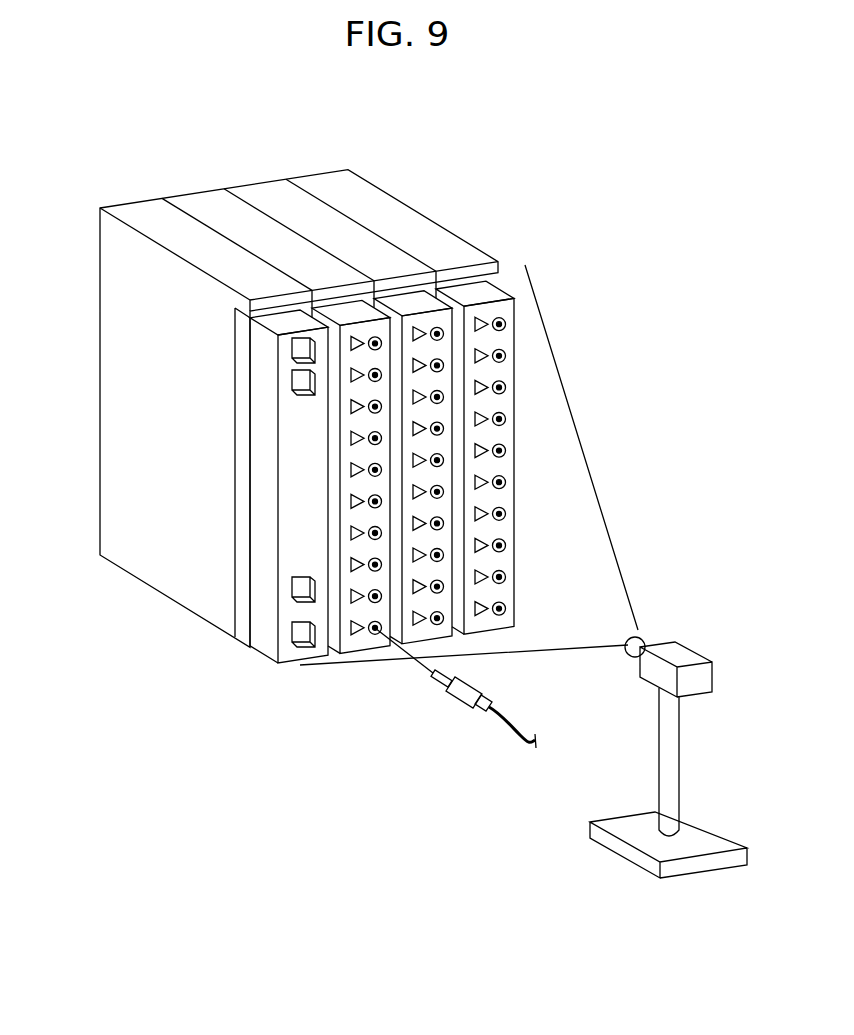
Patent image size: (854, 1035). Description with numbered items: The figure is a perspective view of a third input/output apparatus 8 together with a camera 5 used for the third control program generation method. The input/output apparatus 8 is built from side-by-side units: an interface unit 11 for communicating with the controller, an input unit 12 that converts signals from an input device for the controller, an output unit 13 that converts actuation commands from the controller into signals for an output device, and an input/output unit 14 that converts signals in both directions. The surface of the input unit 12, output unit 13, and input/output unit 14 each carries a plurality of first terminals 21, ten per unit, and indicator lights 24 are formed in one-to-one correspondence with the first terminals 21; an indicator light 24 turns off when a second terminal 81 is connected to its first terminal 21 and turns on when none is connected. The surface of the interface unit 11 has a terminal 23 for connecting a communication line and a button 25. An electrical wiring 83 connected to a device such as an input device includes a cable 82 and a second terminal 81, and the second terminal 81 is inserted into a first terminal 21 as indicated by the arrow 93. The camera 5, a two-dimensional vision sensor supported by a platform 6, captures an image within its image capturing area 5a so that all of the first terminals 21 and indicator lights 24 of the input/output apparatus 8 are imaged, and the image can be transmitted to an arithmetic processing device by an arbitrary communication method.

The third input/output apparatus 8 is at (118, 135).
The interface unit 11 is at (140, 212).
The input unit 12 is at (200, 204).
The output unit 13 is at (262, 196).
The input/output unit 14 is at (323, 188).
The first terminal 21 is at (505, 358).
The terminal 23 is at (290, 386).
The indicator light 24 is at (356, 345).
The button 25 is at (290, 355).
The camera 5 is at (695, 648).
The image capturing area 5a is at (598, 500).
The platform 6 is at (615, 852).
The second terminal 81 is at (458, 695).
The cable 82 is at (507, 738).
The electrical wiring 83 is at (483, 763).
The arrow 93 is at (415, 667).